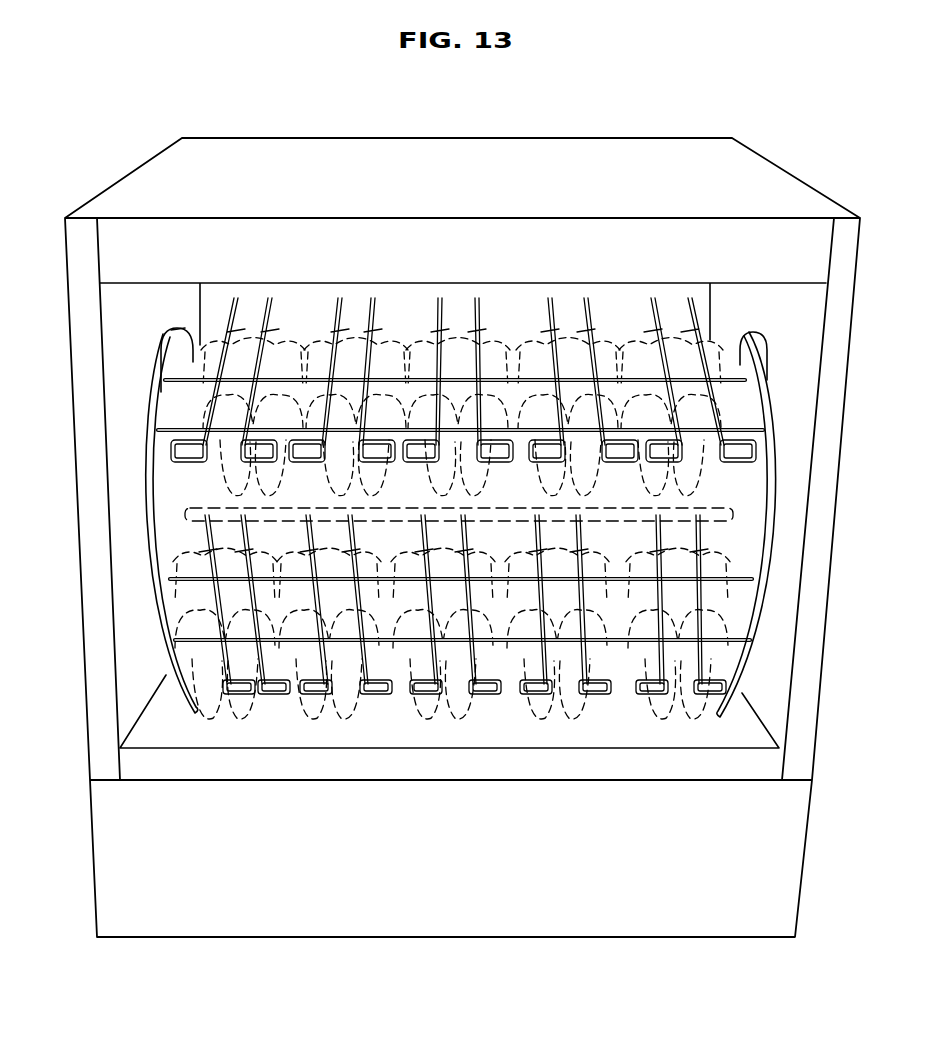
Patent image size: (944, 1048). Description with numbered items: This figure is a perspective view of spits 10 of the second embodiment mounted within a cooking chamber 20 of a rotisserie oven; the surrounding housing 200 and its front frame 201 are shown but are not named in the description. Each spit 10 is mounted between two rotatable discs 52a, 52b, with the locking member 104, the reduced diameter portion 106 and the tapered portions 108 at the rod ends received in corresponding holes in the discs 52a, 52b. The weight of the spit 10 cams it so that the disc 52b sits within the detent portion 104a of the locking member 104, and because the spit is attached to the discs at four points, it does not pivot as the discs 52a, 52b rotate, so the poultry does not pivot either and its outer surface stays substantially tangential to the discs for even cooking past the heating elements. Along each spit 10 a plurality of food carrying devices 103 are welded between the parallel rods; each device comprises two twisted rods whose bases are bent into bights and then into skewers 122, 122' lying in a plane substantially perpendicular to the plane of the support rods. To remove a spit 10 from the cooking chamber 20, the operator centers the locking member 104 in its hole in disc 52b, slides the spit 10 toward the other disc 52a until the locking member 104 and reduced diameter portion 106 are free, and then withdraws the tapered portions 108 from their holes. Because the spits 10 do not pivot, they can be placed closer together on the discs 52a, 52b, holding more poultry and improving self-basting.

The smokehouse cabinet 200 is at (255, 130).
The cabinet interior chamber 201 is at (118, 305).
The cooking chamber 20 is at (531, 310).
The spit 10 is at (463, 489).
The food carrying devices 103 is at (249, 300).
The locking member 104 is at (167, 372).
The detent portion 104a is at (183, 328).
The reduced diameter portion 106 is at (160, 430).
The tapered portions 108 is at (764, 422).
The skewer 122 is at (318, 380).
The skewer 122' is at (397, 375).
The rotatable disc 52a is at (776, 528).
The rotatable disc 52b is at (152, 522).